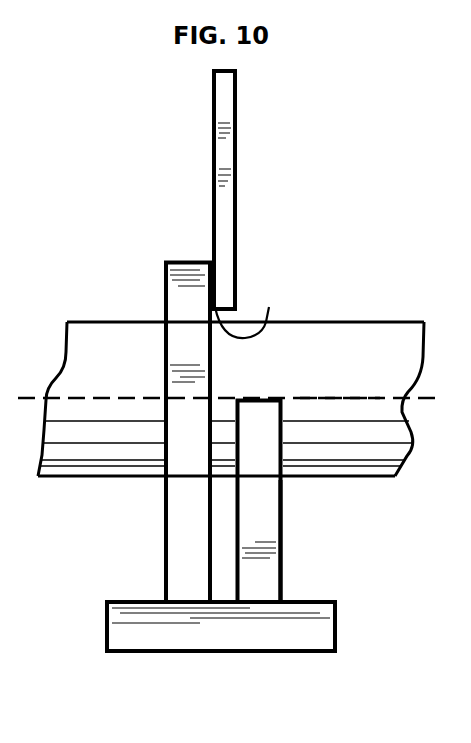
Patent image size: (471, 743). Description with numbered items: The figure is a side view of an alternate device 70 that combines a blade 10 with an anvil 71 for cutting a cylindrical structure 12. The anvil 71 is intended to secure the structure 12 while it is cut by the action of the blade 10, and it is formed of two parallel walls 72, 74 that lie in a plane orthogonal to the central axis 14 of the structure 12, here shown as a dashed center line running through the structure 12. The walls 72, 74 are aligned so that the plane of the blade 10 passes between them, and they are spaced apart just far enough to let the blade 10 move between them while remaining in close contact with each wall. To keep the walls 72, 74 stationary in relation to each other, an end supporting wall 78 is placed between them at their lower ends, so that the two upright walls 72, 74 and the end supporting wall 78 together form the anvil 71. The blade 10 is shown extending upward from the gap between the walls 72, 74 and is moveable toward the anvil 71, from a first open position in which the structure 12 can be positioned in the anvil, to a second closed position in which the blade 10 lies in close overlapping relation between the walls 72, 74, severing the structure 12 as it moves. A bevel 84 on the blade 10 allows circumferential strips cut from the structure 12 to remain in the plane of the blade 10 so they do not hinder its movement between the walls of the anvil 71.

The blade 10 is at (242, 226).
The structure 12 is at (367, 348).
The central axis 14 is at (338, 398).
The alternate device 70 is at (358, 180).
The anvil 71 is at (292, 569).
The parallel wall 72 is at (270, 528).
The parallel wall 74 is at (196, 528).
The end supporting wall 78 is at (151, 644).
The bevel 84 is at (247, 314).